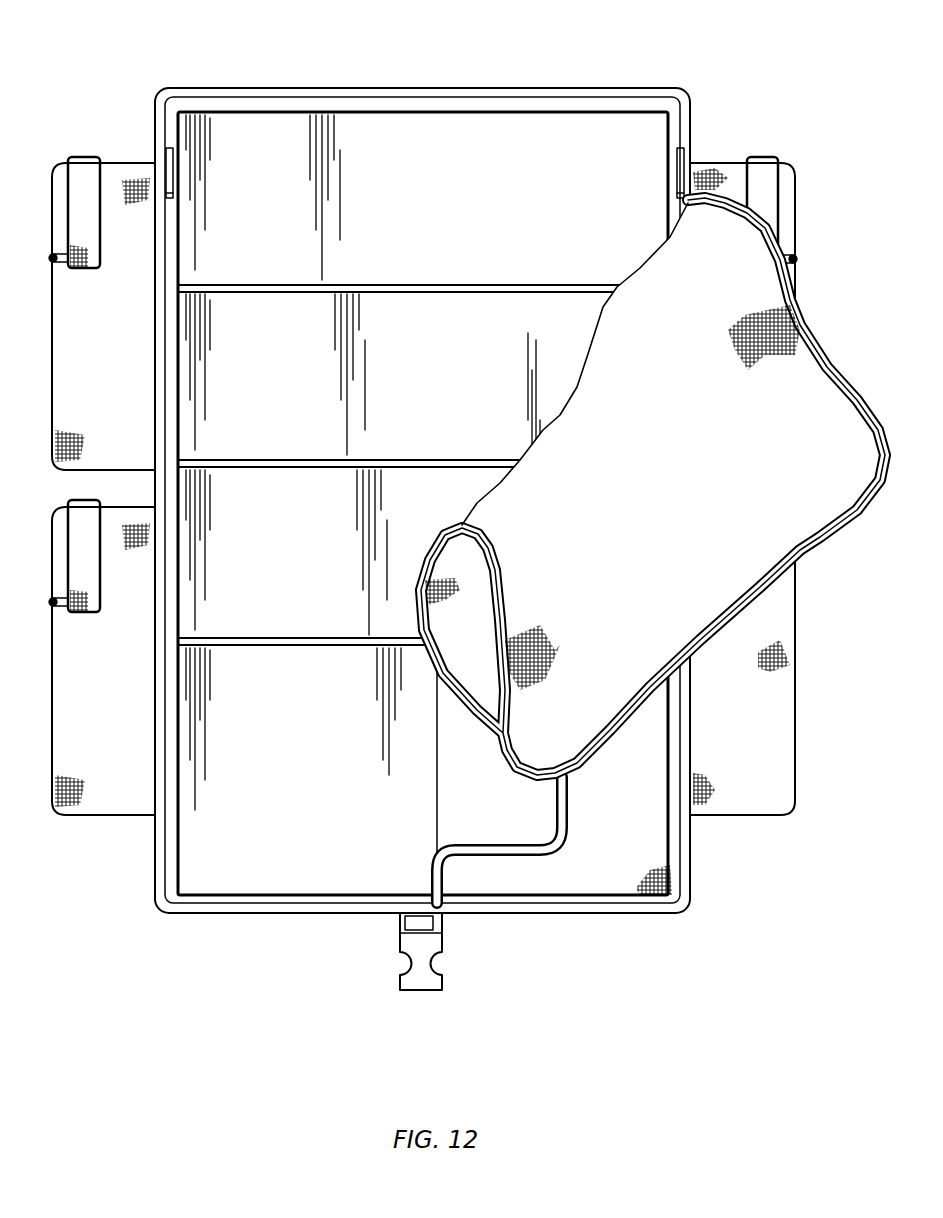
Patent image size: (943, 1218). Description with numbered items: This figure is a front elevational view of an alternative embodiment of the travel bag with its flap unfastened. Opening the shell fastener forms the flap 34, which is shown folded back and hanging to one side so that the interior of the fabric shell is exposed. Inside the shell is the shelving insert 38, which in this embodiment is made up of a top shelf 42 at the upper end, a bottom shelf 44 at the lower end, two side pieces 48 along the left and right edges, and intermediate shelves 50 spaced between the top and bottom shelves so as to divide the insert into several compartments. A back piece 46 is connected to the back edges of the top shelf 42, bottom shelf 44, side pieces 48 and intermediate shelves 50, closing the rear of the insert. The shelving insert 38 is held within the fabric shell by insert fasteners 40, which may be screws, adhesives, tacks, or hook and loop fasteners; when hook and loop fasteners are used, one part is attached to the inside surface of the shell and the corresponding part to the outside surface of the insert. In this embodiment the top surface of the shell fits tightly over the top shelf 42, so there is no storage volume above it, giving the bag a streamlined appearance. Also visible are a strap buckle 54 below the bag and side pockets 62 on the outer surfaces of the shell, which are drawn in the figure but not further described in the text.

The flap 34 is at (765, 540).
The shelving insert 38 is at (600, 108).
The insert fasteners 40 is at (166, 145).
The top shelf 42 is at (243, 112).
The bottom shelf 44 is at (228, 895).
The back piece 46 is at (330, 755).
The side pieces 48 is at (178, 237).
The intermediate shelves 50 is at (443, 285).
The buckle 54 is at (432, 938).
The side pockets 62 is at (52, 375).